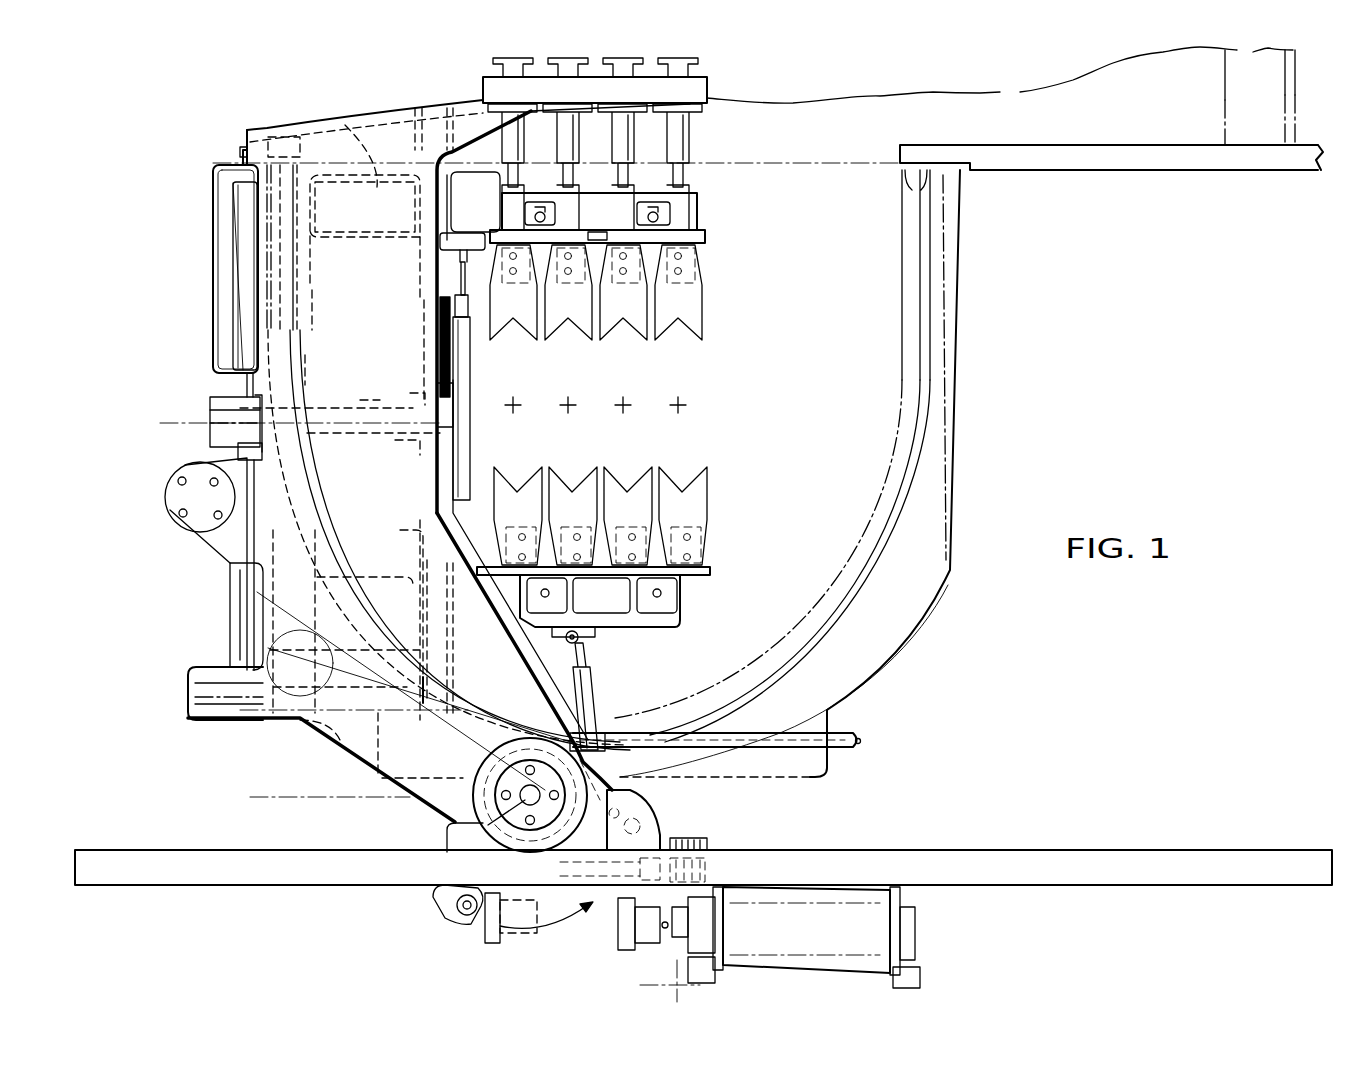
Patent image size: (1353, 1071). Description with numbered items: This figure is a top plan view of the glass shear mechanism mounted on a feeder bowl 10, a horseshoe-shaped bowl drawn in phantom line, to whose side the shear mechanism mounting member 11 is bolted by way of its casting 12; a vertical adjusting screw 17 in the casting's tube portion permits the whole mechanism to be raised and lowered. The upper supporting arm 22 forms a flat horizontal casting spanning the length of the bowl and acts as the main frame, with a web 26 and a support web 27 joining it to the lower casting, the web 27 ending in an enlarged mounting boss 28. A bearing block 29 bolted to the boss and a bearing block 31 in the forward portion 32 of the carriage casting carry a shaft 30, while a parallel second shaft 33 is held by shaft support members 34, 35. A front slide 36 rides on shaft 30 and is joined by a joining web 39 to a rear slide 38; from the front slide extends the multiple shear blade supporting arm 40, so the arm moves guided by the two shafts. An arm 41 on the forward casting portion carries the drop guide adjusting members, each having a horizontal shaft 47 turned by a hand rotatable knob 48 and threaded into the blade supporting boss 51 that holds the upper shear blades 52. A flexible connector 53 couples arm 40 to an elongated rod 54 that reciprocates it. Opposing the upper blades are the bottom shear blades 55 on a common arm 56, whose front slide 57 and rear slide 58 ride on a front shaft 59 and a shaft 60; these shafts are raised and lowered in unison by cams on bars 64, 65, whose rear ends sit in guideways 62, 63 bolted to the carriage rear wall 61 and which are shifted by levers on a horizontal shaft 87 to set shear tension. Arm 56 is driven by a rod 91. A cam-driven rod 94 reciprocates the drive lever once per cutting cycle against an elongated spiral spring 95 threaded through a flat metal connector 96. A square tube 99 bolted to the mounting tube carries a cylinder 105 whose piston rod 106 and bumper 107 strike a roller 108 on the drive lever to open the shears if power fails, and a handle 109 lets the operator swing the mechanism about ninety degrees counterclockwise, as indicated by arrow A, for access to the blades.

The feeder bowl 10 is at (935, 293).
The direction arrow A is at (980, 385).
The shear mechanism mounting member 11 is at (432, 813).
The casting 12 is at (616, 735).
The vertical adjusting screw 17 is at (465, 840).
The upper supporting arm 22 is at (375, 345).
The web 26 is at (345, 737).
The support web 27 is at (372, 402).
The mounting boss 28 is at (415, 397).
The bearing block 29 is at (447, 393).
The shaft 30 is at (440, 313).
The bearing block 31 is at (457, 118).
The forward portion 32 is at (418, 123).
The second shaft 33 is at (312, 330).
The shaft support member 34 is at (305, 382).
The shaft support member 35 is at (268, 128).
The front slide 36 is at (443, 180).
The rear slide 38 is at (308, 223).
The joining web 39 is at (345, 125).
The multiple shear blade supporting arm 40 is at (598, 207).
The arm 41 is at (527, 93).
The horizontal shaft 47 is at (683, 170).
The hand rotatable knob 48 is at (693, 60).
The blade supporting boss 51 is at (695, 242).
The upper shear blades 52 is at (668, 317).
The flexible connector 53 is at (455, 278).
The elongated rod 54 is at (455, 337).
The bottom shear blades 55 is at (640, 487).
The arm 56 is at (668, 611).
The front slide 57 is at (420, 553).
The rear slide 58 is at (318, 550).
The front shaft 59 is at (460, 480).
The shaft 60 is at (305, 482).
The rear wall 61 is at (262, 713).
The guideway 62 is at (217, 695).
The guideway 63 is at (218, 414).
The bar 64 is at (362, 682).
The bar 65 is at (407, 447).
The horizontal shaft 87 is at (233, 633).
The rod 91 is at (582, 670).
The rod 94 is at (845, 734).
The elongated spiral spring 95 is at (708, 843).
The flat metal connector 96 is at (688, 840).
The square tube 99 is at (1072, 868).
The cylinder 105 is at (910, 929).
The piston rod 106 is at (668, 934).
The bumper 107 is at (620, 941).
The roller 108 is at (475, 925).
The handle 109 is at (215, 294).